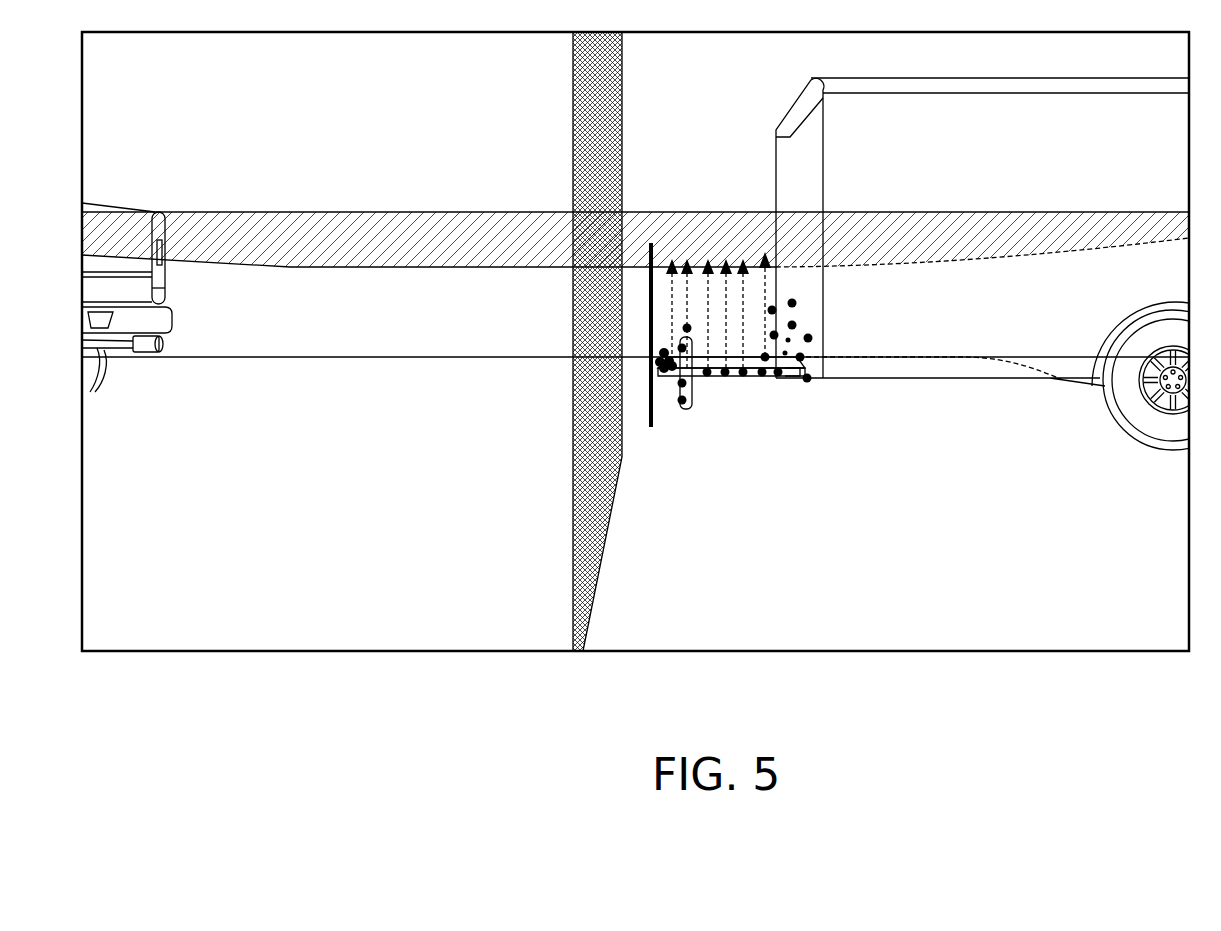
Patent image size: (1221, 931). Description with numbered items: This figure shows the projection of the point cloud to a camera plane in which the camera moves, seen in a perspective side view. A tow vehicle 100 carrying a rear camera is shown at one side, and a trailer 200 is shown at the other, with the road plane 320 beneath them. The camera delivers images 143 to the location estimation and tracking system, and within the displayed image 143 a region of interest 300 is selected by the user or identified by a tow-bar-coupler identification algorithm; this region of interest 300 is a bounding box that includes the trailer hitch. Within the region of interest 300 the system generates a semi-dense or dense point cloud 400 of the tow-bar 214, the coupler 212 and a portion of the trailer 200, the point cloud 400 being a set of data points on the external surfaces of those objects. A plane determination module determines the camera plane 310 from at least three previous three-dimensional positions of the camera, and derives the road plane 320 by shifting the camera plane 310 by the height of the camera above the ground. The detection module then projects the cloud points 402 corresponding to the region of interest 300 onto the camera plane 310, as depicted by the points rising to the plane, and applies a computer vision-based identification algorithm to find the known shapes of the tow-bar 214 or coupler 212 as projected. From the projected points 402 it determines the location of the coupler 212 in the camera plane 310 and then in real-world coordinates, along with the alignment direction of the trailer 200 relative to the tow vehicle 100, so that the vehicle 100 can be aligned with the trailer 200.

The tow vehicle 100 is at (158, 326).
The images 143 is at (608, 495).
The trailer 200 is at (963, 156).
The coupler 212 is at (678, 404).
The tow-bar 214 is at (807, 383).
The region of interest 300 is at (651, 428).
The camera plane 310 is at (450, 253).
The road plane 320 is at (330, 505).
The point cloud 400 is at (784, 454).
The cloud points 402 is at (707, 377).